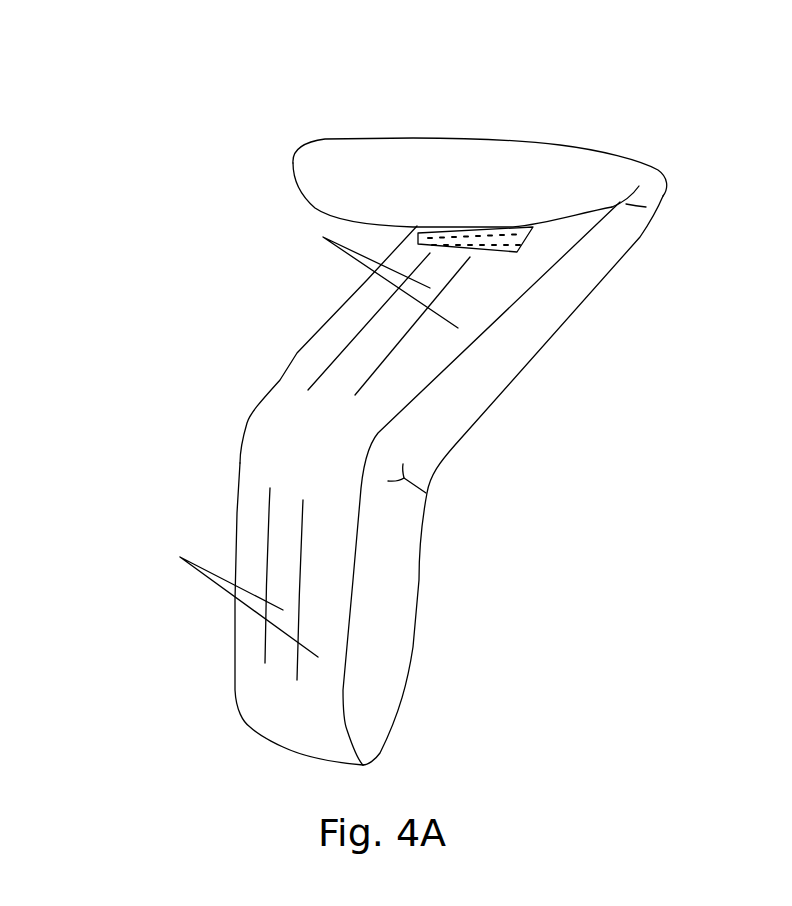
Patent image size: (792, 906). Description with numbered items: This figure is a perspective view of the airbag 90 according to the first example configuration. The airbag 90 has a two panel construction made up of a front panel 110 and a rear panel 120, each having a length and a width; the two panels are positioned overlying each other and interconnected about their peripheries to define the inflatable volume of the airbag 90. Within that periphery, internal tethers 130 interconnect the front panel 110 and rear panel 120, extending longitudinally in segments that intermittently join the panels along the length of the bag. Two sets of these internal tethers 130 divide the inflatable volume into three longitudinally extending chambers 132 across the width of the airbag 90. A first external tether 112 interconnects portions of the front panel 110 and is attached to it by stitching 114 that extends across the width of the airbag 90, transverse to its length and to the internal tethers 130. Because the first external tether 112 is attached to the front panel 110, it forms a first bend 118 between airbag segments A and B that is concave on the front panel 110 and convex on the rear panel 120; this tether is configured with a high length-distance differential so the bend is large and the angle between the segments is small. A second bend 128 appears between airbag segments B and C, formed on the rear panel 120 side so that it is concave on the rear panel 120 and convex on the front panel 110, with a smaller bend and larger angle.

The airbag 90 is at (672, 133).
The front panel 110 is at (298, 357).
The first external tether 112 is at (490, 235).
The stitching 114 is at (463, 235).
The first bend 118 is at (655, 187).
The rear panel 120 is at (450, 452).
The second bend 128 is at (278, 432).
The internal tethers 130 is at (388, 365).
The chambers 132 is at (400, 258).